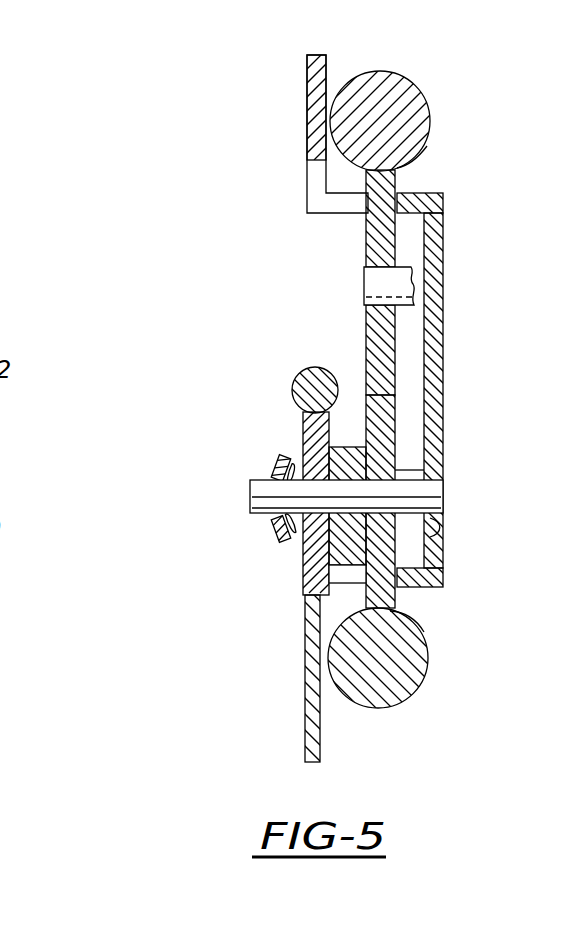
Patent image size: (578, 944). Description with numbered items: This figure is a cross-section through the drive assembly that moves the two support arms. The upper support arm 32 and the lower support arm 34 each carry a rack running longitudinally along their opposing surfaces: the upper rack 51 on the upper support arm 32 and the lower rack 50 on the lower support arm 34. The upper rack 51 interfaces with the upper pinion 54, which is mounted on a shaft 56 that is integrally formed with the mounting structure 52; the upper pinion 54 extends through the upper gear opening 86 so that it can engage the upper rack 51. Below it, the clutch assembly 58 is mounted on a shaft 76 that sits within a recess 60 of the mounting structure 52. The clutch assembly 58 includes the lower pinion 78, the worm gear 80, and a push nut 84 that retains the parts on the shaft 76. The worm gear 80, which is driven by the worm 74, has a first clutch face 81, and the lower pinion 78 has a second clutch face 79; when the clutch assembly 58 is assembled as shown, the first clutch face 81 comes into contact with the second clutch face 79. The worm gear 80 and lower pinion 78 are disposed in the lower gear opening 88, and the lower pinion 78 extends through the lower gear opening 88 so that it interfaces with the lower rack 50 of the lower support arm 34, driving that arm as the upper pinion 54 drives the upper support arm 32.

The upper support arm 32 is at (417, 103).
The upper rack 51 is at (421, 146).
The upper gear opening 86 is at (308, 173).
The upper pinion 54 is at (374, 242).
The upper shaft 56 is at (404, 268).
The mounting structure 52 is at (433, 288).
The worm 74 is at (303, 372).
The worm gear 80 is at (301, 417).
The clutch assembly 58 is at (262, 440).
The push nut 84 is at (268, 527).
The shaft 76 is at (443, 506).
The first clutch face 81 is at (360, 478).
The second clutch face 79 is at (370, 465).
The recess 60 is at (443, 540).
The lower gear opening 88 is at (343, 583).
The lower rack 50 is at (424, 620).
The lower support arm 34 is at (418, 667).
The lower pinion 78 is at (385, 407).